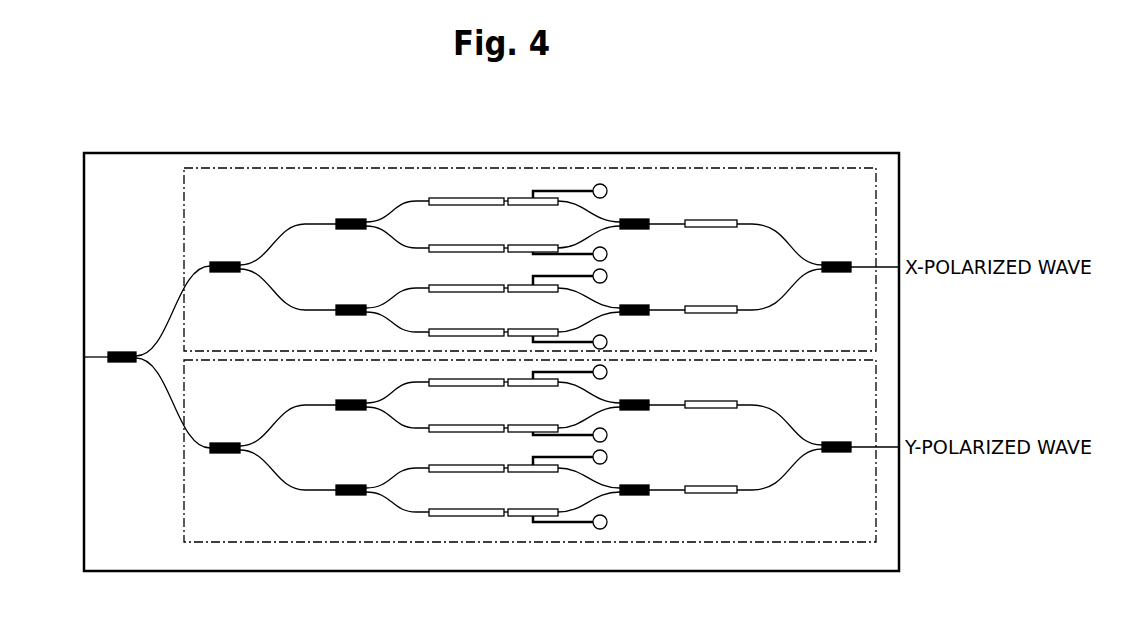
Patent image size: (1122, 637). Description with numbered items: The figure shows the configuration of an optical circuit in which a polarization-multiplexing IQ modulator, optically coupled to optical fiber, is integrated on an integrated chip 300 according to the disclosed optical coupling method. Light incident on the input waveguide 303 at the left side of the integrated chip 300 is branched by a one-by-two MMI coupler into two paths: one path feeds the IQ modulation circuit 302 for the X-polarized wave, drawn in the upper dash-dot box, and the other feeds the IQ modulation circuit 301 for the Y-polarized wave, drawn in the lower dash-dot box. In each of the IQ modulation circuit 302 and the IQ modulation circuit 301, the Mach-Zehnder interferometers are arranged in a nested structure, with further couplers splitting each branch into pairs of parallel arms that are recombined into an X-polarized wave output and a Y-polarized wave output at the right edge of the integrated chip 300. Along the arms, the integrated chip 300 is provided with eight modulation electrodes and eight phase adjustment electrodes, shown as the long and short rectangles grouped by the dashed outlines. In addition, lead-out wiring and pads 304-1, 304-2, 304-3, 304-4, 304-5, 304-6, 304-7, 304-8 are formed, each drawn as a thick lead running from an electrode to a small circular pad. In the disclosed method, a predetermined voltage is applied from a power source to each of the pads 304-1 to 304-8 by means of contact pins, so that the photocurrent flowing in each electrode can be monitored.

The integrated chip 300 is at (496, 127).
The IQ modulation circuit for Y-polarized wave 301 is at (876, 383).
The IQ modulation circuit for X-polarized wave 302 is at (876, 211).
The input waveguide 303 is at (102, 351).
The lead-out wiring and pad 304-1 is at (607, 191).
The lead-out wiring and pad 304-2 is at (607, 254).
The lead-out wiring and pad 304-3 is at (607, 276).
The lead-out wiring and pad 304-4 is at (607, 342).
The lead-out wiring and pad 304-5 is at (607, 372).
The lead-out wiring and pad 304-6 is at (607, 435).
The lead-out wiring and pad 304-7 is at (607, 457).
The lead-out wiring and pad 304-8 is at (607, 522).